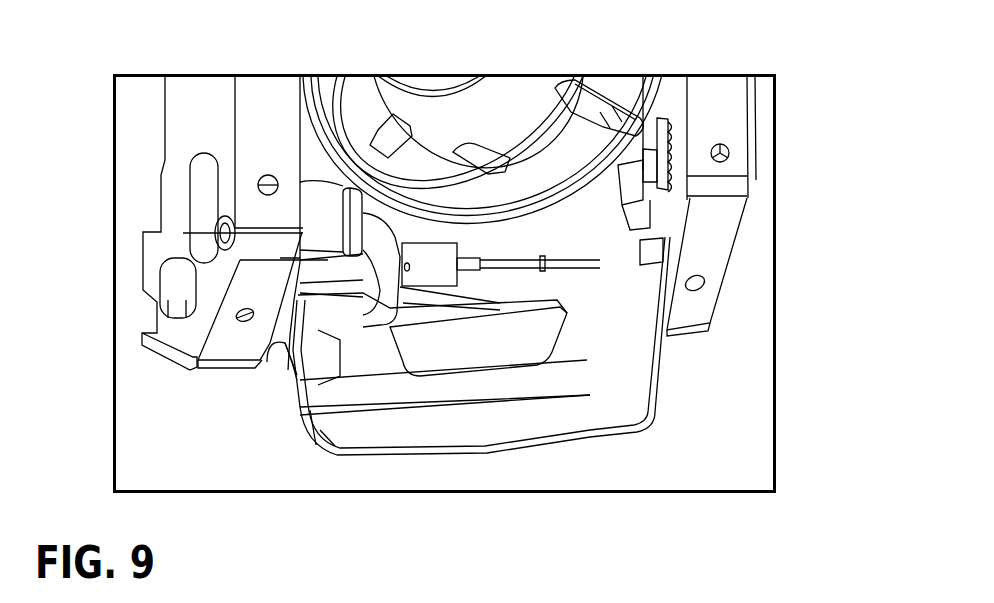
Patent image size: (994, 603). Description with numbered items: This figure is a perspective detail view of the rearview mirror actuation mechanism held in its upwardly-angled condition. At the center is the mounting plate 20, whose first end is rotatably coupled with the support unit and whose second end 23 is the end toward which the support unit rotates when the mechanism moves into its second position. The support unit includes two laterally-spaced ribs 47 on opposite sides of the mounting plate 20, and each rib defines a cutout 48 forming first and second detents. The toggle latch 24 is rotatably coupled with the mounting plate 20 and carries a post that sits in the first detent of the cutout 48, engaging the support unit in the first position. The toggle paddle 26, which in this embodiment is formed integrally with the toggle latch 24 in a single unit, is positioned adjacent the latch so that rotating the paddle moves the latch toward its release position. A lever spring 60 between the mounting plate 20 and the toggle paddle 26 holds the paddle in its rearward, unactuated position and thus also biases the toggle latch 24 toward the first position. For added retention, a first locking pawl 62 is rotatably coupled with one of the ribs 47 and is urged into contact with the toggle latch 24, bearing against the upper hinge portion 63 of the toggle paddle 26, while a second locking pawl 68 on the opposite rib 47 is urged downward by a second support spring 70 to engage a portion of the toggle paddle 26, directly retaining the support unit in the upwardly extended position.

The mounting plate 20 is at (664, 110).
The second support spring 70 is at (674, 137).
The second locking pawl 68 is at (645, 198).
The ribs 47 is at (262, 242).
The cutout 48 is at (152, 279).
The first locking pawl 62 is at (326, 232).
The toggle latch 24 is at (273, 352).
The upper hinge portion 63 is at (340, 270).
The lever spring 60 is at (554, 264).
The second end 23 is at (497, 333).
The toggle paddle 26 is at (568, 418).